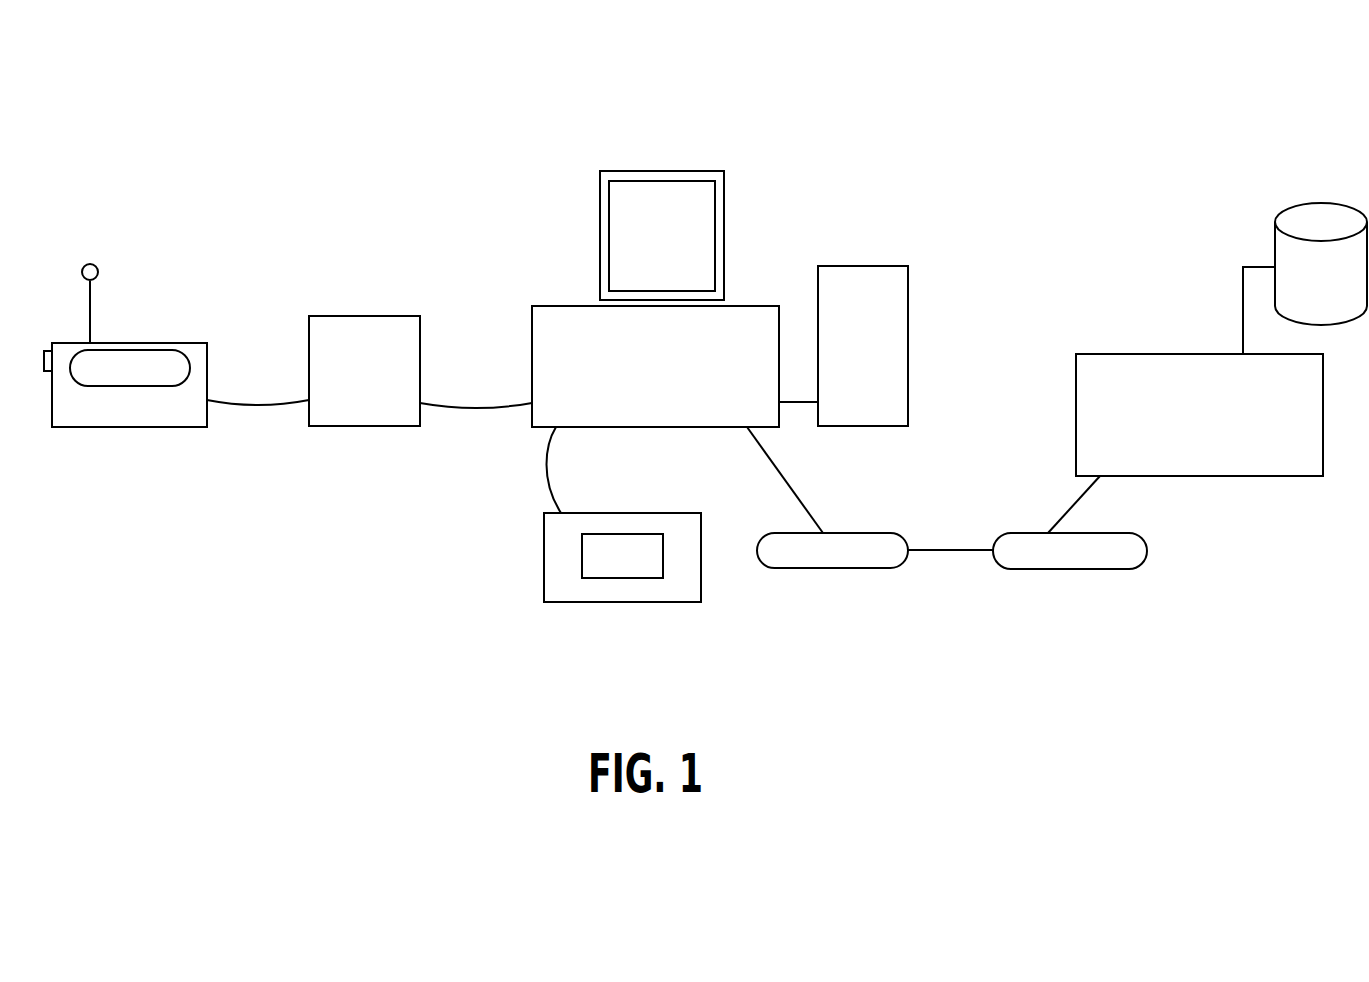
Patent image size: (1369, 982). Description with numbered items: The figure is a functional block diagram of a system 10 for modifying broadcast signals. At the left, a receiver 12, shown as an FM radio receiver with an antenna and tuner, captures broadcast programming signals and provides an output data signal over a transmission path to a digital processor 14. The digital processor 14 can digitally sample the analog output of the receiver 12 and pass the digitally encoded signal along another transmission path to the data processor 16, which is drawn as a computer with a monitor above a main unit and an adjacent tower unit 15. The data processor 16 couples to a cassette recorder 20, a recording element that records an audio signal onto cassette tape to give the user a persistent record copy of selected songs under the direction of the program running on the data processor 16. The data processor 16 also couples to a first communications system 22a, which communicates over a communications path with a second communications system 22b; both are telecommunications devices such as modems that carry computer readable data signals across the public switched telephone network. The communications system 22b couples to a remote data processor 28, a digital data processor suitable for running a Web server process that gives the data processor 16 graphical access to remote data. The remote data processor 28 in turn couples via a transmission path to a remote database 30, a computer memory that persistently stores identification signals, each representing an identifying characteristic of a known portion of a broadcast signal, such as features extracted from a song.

The system 10 is at (1043, 145).
The receiver 12 is at (137, 340).
The digital processor 14 is at (348, 316).
The computer tower 15 is at (880, 266).
The data processor 16 is at (683, 171).
The cassette recorder 20 is at (640, 602).
The communications system 22a is at (832, 568).
The communications system 22b is at (1068, 569).
The remote data processor 28 is at (1143, 354).
The remote database 30 is at (1275, 232).